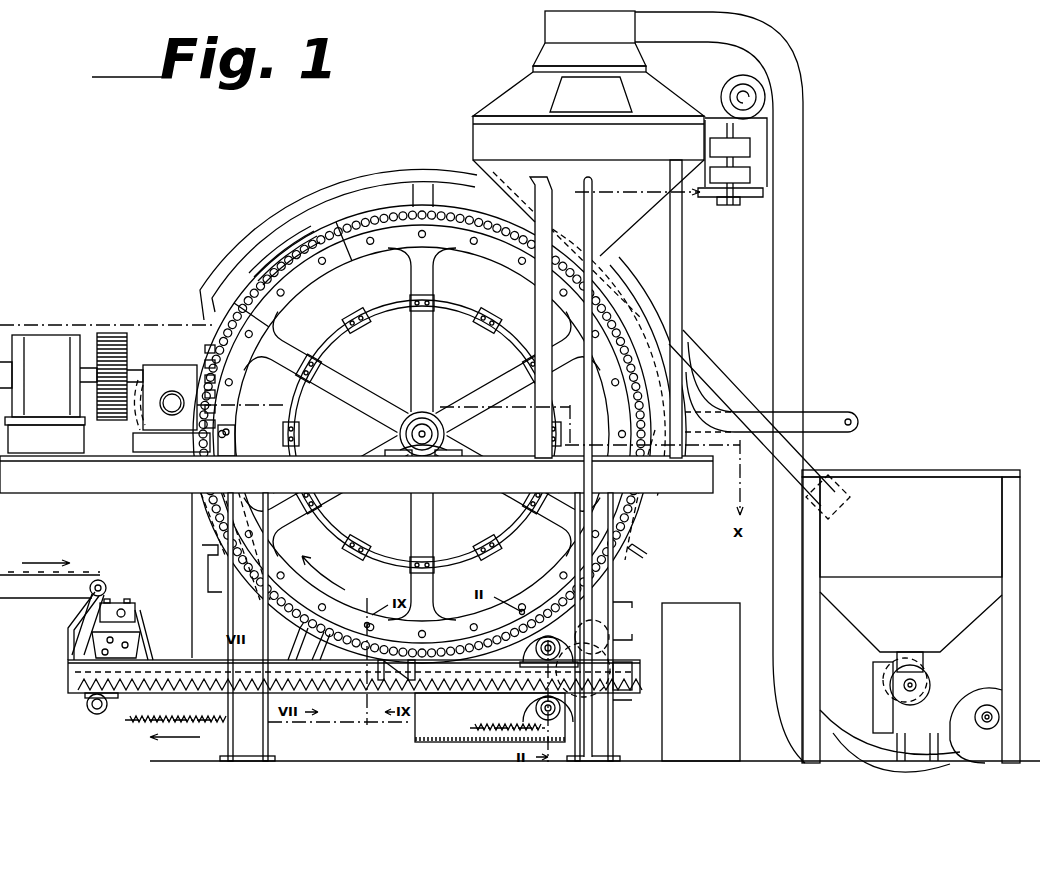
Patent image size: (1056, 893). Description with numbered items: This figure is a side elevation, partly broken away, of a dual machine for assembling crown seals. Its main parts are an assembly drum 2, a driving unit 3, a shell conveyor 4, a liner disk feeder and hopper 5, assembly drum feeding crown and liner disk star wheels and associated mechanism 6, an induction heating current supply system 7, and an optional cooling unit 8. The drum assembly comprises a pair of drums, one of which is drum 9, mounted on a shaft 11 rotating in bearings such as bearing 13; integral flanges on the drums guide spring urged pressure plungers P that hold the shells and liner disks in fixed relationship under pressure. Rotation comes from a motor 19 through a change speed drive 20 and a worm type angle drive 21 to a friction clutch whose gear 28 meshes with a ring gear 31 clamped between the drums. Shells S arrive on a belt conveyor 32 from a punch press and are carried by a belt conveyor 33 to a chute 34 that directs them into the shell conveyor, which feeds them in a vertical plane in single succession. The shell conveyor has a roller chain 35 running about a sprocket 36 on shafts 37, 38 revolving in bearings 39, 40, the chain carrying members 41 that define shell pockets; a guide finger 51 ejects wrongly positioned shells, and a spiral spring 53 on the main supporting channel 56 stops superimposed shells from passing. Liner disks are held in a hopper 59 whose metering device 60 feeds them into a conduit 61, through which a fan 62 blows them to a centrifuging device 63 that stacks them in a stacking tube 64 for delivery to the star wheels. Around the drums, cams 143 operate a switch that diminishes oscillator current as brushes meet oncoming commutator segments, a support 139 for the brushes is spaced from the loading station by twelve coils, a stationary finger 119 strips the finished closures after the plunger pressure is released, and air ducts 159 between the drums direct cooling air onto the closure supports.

The assembly drum 2 is at (434, 304).
The driving unit 3 is at (94, 330).
The shell conveyor 4 is at (168, 659).
The liner disk feeder and hopper 5 is at (660, 98).
The assembly drum feeding crown and liner disk star wheels and associated mechanism 6 is at (541, 658).
The induction heating current supply system 7 is at (708, 601).
The cooling unit 8 is at (844, 416).
The drum 9 is at (266, 322).
The shaft 11 is at (432, 432).
The bearing 13 is at (421, 432).
The motor 19 is at (48, 376).
The change speed drive 20 is at (118, 350).
The worm type angle drive 21 is at (168, 408).
The gear 28 is at (225, 417).
The ring gear 31 is at (222, 396).
The belt conveyor 32 is at (50, 594).
The belt conveyor 33 is at (133, 613).
The chute 34 is at (138, 640).
The roller chain 35 is at (470, 717).
The sprocket 36 is at (122, 726).
The shaft 37 is at (88, 708).
The shaft 38 is at (560, 708).
The bearing 39 is at (565, 716).
The bearing 40 is at (110, 699).
The members defining pockets 41 is at (463, 731).
The guide finger 51 is at (315, 645).
The spiral spring 53 is at (214, 603).
The main supporting channel 56 is at (70, 686).
The hopper 59 is at (911, 616).
The metering device 60 is at (918, 684).
The conduit 61 is at (830, 720).
The fan 62 is at (976, 725).
The centrifuging device 63 is at (588, 186).
The stacking tube 64 is at (593, 210).
The stationary finger 119 is at (640, 552).
The support 139 is at (425, 668).
The cam 143 is at (388, 312).
The air duct 159 is at (390, 186).
The pressure plunger P is at (604, 392).
The shell S is at (126, 598).